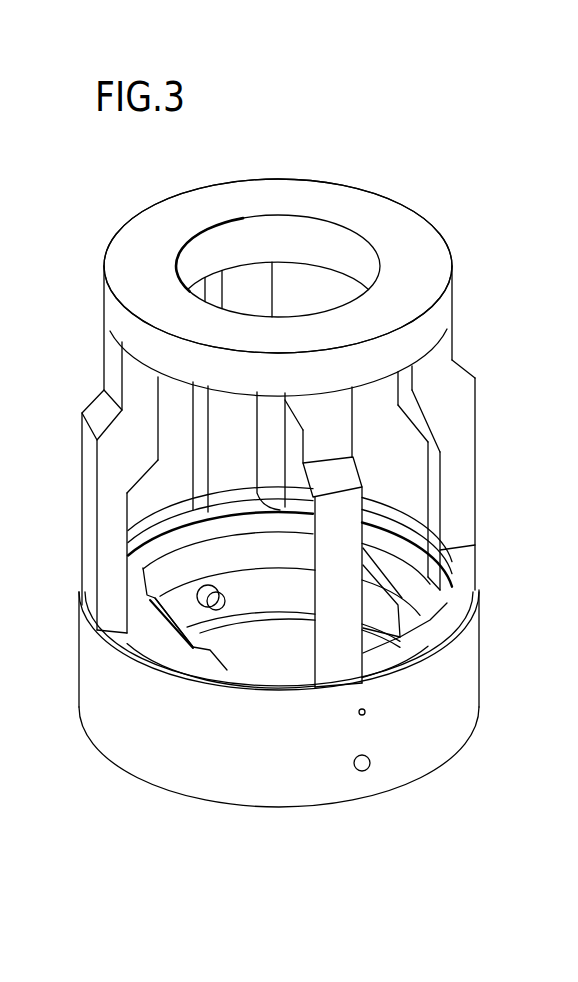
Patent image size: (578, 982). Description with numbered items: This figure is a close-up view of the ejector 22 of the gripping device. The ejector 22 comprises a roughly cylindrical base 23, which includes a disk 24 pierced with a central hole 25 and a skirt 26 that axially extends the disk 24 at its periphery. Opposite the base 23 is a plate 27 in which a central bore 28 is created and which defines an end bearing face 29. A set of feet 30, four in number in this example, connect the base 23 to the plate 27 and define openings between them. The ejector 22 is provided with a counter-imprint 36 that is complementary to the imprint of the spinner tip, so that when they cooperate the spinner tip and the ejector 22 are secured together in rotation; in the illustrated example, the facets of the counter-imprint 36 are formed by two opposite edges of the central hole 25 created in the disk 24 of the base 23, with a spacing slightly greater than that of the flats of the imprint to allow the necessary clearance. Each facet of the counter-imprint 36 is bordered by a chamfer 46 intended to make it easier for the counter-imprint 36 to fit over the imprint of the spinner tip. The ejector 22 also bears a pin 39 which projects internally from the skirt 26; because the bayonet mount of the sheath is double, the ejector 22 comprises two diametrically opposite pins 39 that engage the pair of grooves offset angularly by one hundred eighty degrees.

The ejector 22 is at (440, 213).
The base 23 is at (480, 647).
The disk 24 is at (180, 535).
The central hole 25 is at (223, 547).
The skirt 26 is at (452, 732).
The plate 27 is at (400, 330).
The central bore 28 is at (343, 258).
The end bearing face 29 is at (330, 197).
The feet 30 is at (215, 432).
The counter-imprint 36 is at (195, 648).
The pin 39 is at (212, 598).
The chamfer 46 is at (183, 633).